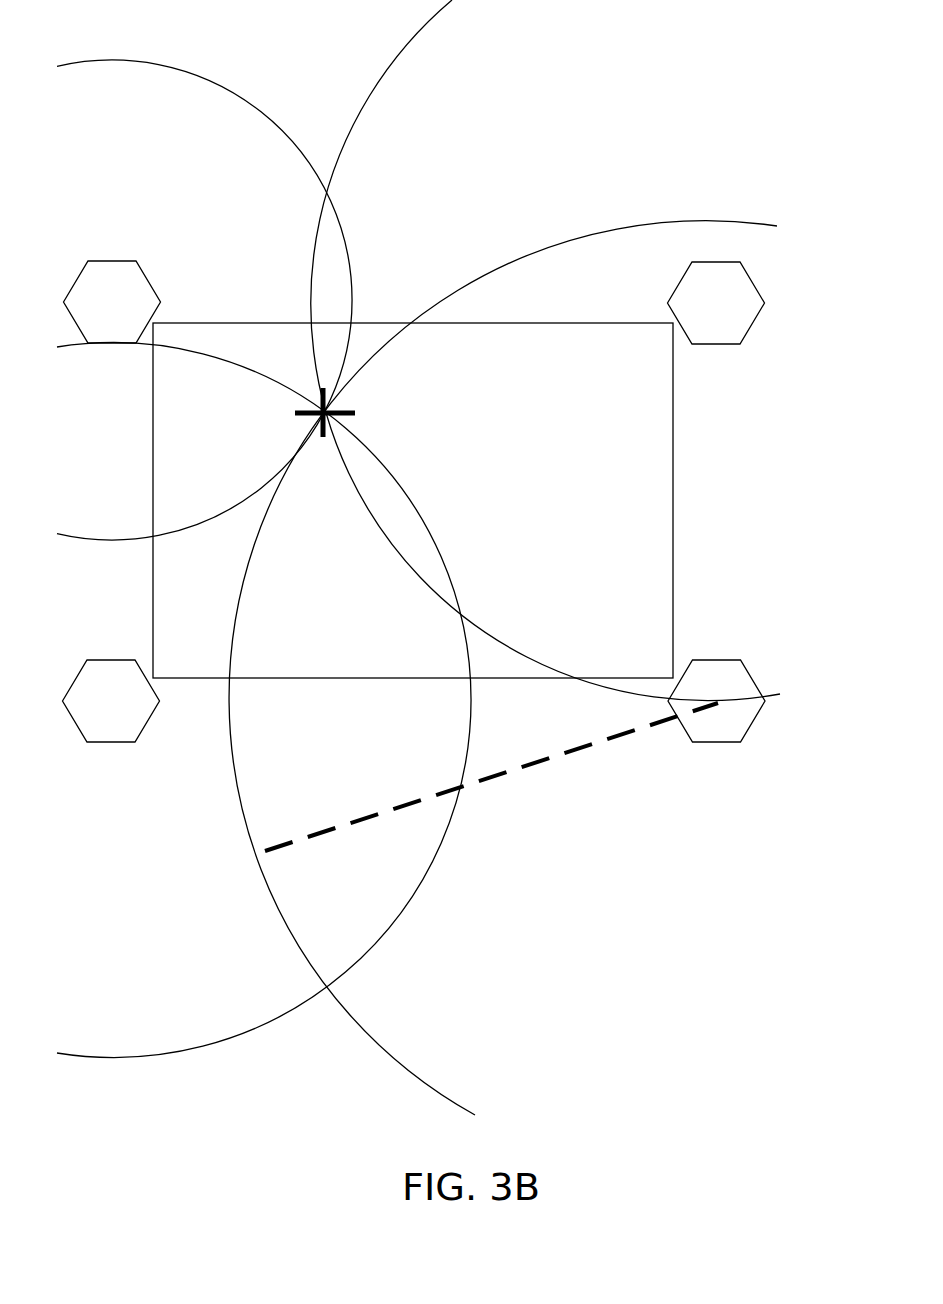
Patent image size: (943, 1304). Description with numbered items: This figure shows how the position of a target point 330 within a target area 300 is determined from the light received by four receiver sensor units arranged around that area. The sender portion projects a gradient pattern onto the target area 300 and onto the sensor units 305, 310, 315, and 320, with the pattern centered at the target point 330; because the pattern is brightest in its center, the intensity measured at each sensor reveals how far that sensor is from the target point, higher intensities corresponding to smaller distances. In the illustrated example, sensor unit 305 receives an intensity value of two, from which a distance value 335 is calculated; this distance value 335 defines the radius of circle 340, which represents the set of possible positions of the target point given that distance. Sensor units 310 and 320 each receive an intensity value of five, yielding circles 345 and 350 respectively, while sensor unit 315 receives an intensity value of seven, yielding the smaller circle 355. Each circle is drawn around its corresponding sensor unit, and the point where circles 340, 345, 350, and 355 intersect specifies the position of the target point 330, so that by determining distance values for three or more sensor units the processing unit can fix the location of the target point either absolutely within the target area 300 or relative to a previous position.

The target area 300 is at (413, 500).
The sensor unit 305 is at (716, 702).
The sensor unit 310 is at (716, 303).
The sensor unit 315 is at (112, 302).
The sensor unit 320 is at (111, 702).
The target point 330 is at (332, 410).
The distance value 335 is at (420, 794).
The circle 340 is at (233, 782).
The circle 345 is at (387, 72).
The circle 350 is at (449, 832).
The circle 355 is at (198, 523).